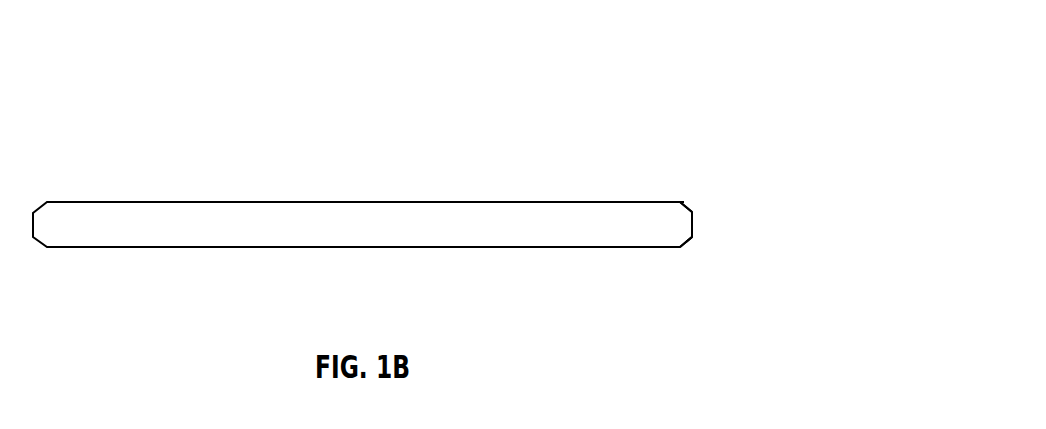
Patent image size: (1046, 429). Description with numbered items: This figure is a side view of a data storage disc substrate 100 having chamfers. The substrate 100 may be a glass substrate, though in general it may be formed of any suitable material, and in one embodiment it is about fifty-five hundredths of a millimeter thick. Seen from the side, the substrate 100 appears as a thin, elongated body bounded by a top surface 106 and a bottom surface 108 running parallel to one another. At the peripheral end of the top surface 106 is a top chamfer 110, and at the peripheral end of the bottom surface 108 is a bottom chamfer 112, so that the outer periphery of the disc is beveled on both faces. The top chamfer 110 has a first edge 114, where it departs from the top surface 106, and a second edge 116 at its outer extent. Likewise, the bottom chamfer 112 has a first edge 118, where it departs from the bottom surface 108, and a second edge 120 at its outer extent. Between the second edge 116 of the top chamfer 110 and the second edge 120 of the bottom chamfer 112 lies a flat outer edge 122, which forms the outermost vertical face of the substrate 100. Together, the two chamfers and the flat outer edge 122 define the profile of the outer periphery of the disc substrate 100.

The data storage disc substrate 100 is at (656, 65).
The top surface 106 is at (352, 202).
The bottom surface 108 is at (352, 247).
The top chamfer 110 is at (692, 212).
The bottom chamfer 112 is at (689, 240).
The first edge of top chamfer 114 is at (682, 202).
The second edge of top chamfer 116 is at (692, 212).
The first edge of bottom chamfer 118 is at (680, 247).
The second edge of bottom chamfer 120 is at (692, 237).
The flat outer edge 122 is at (692, 224).